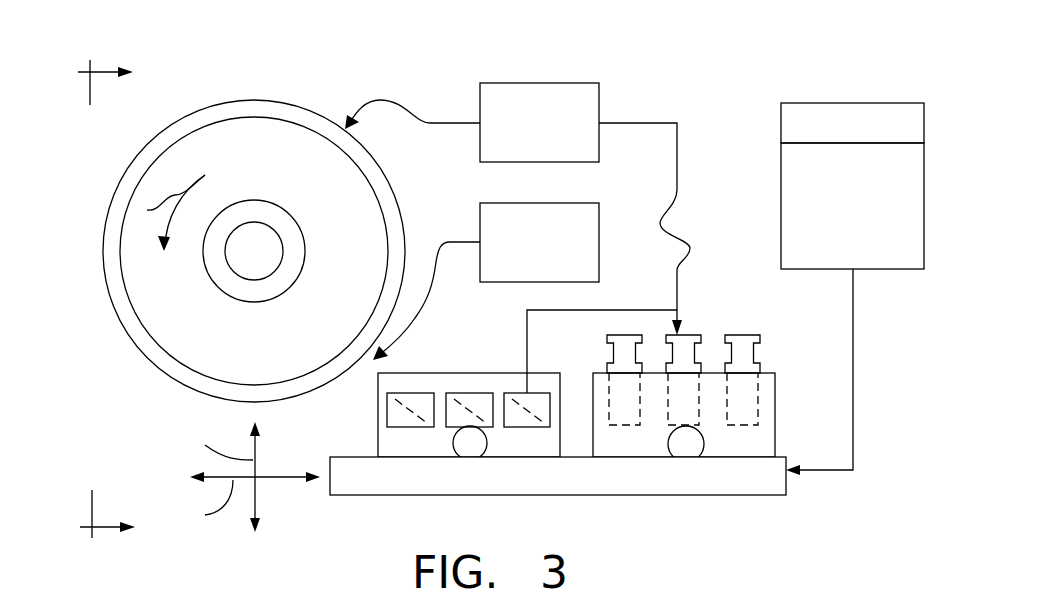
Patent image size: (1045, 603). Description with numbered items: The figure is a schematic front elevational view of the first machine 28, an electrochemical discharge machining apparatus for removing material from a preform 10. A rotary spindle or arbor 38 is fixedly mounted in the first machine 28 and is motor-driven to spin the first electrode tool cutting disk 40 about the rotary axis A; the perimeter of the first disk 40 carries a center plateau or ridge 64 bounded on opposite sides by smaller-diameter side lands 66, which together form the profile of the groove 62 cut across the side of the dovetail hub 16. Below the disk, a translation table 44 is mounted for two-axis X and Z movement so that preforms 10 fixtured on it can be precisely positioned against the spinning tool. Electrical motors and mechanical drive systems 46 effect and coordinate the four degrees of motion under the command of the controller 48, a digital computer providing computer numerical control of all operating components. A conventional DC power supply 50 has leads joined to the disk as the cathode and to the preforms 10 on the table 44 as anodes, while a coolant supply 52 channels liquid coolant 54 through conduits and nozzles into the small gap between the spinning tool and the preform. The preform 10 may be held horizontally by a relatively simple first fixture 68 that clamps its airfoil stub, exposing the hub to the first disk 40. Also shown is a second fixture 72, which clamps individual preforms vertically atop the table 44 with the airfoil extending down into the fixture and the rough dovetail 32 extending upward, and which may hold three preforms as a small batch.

The first machine 28 is at (752, 56).
The first electrode tool cutting disk 40 is at (370, 279).
The center plateau or ridge 64 is at (257, 100).
The side lands 66 is at (273, 120).
The rotary spindle or arbor 38 is at (263, 237).
The DC power supply 50 is at (570, 83).
The coolant supply 52 is at (570, 203).
The liquid coolant 54 is at (420, 312).
The controller 48 is at (781, 125).
The electrical motors and mechanical drive systems 46 is at (781, 235).
The first fixture 68 is at (378, 408).
The preform 10 is at (410, 435).
The dovetail hub 16 is at (527, 427).
The second fixture 72 is at (775, 397).
The groove 62 is at (716, 363).
The rough dovetail 32 is at (742, 352).
The translation table 44 is at (712, 495).